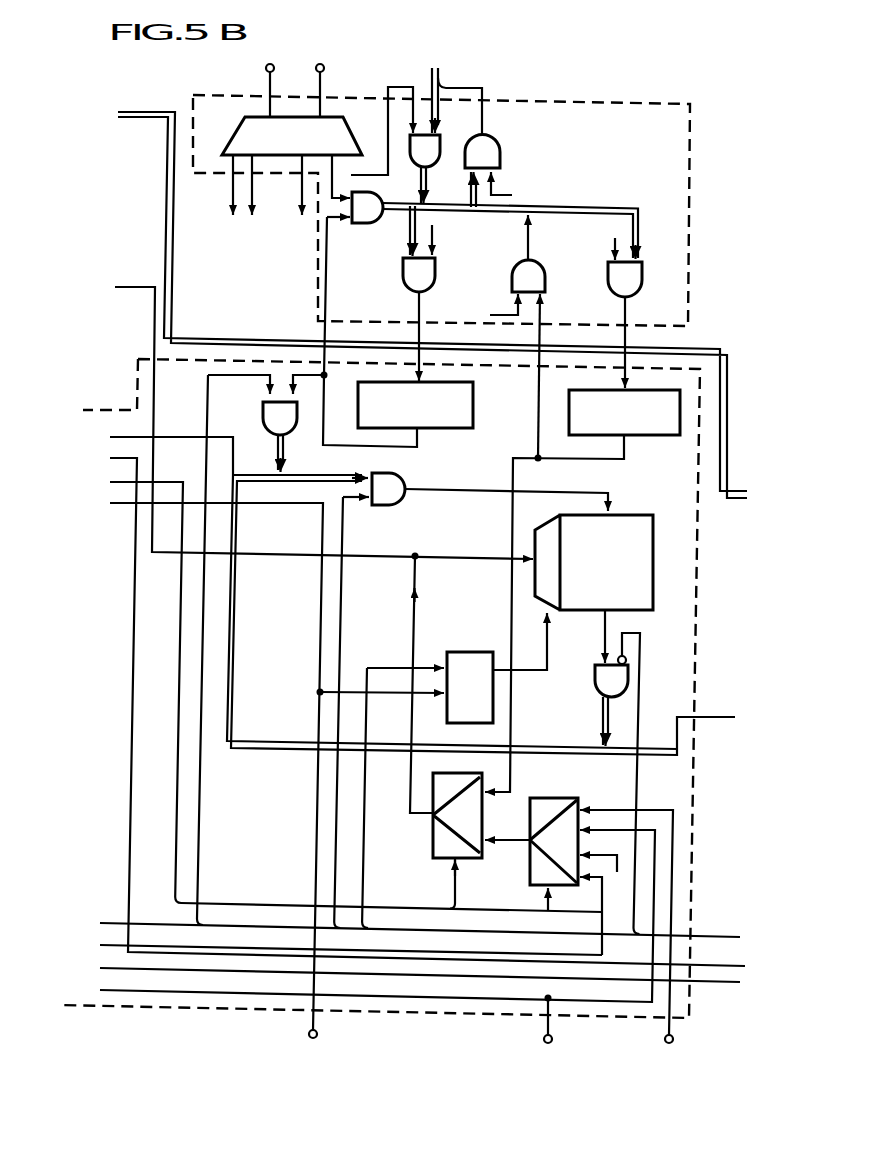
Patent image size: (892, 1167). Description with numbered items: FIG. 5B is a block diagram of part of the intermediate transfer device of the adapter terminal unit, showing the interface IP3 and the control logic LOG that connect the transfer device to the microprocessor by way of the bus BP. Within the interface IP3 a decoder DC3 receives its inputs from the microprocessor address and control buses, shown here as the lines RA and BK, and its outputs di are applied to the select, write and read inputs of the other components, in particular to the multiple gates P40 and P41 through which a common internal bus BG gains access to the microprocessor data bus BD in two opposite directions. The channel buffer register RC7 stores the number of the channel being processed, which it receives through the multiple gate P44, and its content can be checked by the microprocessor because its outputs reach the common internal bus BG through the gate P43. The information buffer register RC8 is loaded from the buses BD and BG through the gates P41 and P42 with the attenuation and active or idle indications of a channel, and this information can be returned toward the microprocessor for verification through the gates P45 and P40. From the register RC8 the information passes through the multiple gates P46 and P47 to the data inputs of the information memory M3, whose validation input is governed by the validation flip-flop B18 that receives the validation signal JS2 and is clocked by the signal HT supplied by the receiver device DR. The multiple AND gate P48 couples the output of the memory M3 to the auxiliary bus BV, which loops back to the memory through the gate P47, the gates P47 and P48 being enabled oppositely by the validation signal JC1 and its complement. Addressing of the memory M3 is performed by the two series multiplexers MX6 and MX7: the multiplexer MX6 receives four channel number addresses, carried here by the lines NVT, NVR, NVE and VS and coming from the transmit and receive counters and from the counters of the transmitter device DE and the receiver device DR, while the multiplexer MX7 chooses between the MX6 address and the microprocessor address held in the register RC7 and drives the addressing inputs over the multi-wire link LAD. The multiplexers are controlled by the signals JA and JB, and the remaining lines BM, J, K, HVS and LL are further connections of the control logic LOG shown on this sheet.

The bus BP is at (453, 30).
The signal RA is at (271, 80).
The control bus BK is at (322, 80).
The data bus BD is at (437, 88).
The decoder DC3 is at (250, 128).
The interface IP3 is at (588, 106).
The multiple gate P40 is at (498, 152).
The multiple gate P41 is at (442, 148).
The gate P42 is at (406, 274).
The gate P43 is at (521, 269).
The multiple gate P44 is at (607, 280).
The gate P45 is at (376, 223).
The multiple gate P46 is at (268, 422).
The multiple gate P47 is at (410, 502).
The multiple AND gate P48 is at (600, 686).
The common internal bus BG is at (582, 208).
The outputs di is at (410, 238).
The bus BM is at (432, 307).
The multi-wire link LAD is at (302, 418).
The control logic LOG is at (237, 1005).
The signal J is at (182, 404).
The signal K is at (387, 585).
The signal VS is at (427, 711).
The signal NVT is at (697, 858).
The clock signal HT is at (265, 775).
The signal HVS is at (614, 950).
The signal LL is at (418, 979).
The signal NVR is at (697, 834).
The signal NVE is at (635, 939).
The transmitter device DE is at (697, 1065).
The receiver device DR is at (571, 1062).
The auxiliary bus BV is at (497, 618).
The validation signal JC1 is at (343, 520).
The validation signal JS2 is at (401, 663).
The control signal JA is at (553, 909).
The control signal JB is at (458, 900).
The buffer register RC8 is at (470, 400).
The channel buffer register RC7 is at (648, 420).
The information memory M3 is at (636, 528).
The validation flip-flop B18 is at (481, 650).
The multiplexer MX7 is at (438, 838).
The multiplexer MX6 is at (536, 800).